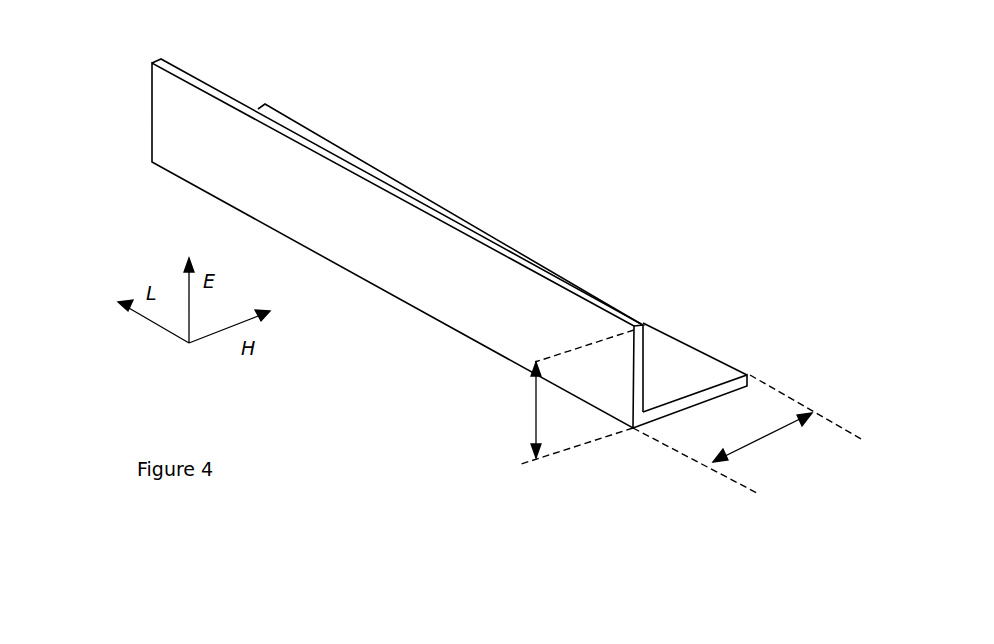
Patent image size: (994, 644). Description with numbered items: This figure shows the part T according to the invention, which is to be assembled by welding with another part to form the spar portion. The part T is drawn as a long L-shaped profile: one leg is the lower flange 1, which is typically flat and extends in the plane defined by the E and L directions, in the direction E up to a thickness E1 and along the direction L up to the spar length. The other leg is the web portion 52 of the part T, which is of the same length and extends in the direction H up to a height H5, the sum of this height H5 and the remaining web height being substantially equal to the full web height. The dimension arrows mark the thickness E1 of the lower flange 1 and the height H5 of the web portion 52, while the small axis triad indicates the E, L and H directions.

The lower flange 1 is at (240, 165).
The web portion 52 is at (682, 365).
The part T is at (513, 219).
The thickness E1 is at (519, 410).
The height H5 is at (762, 438).